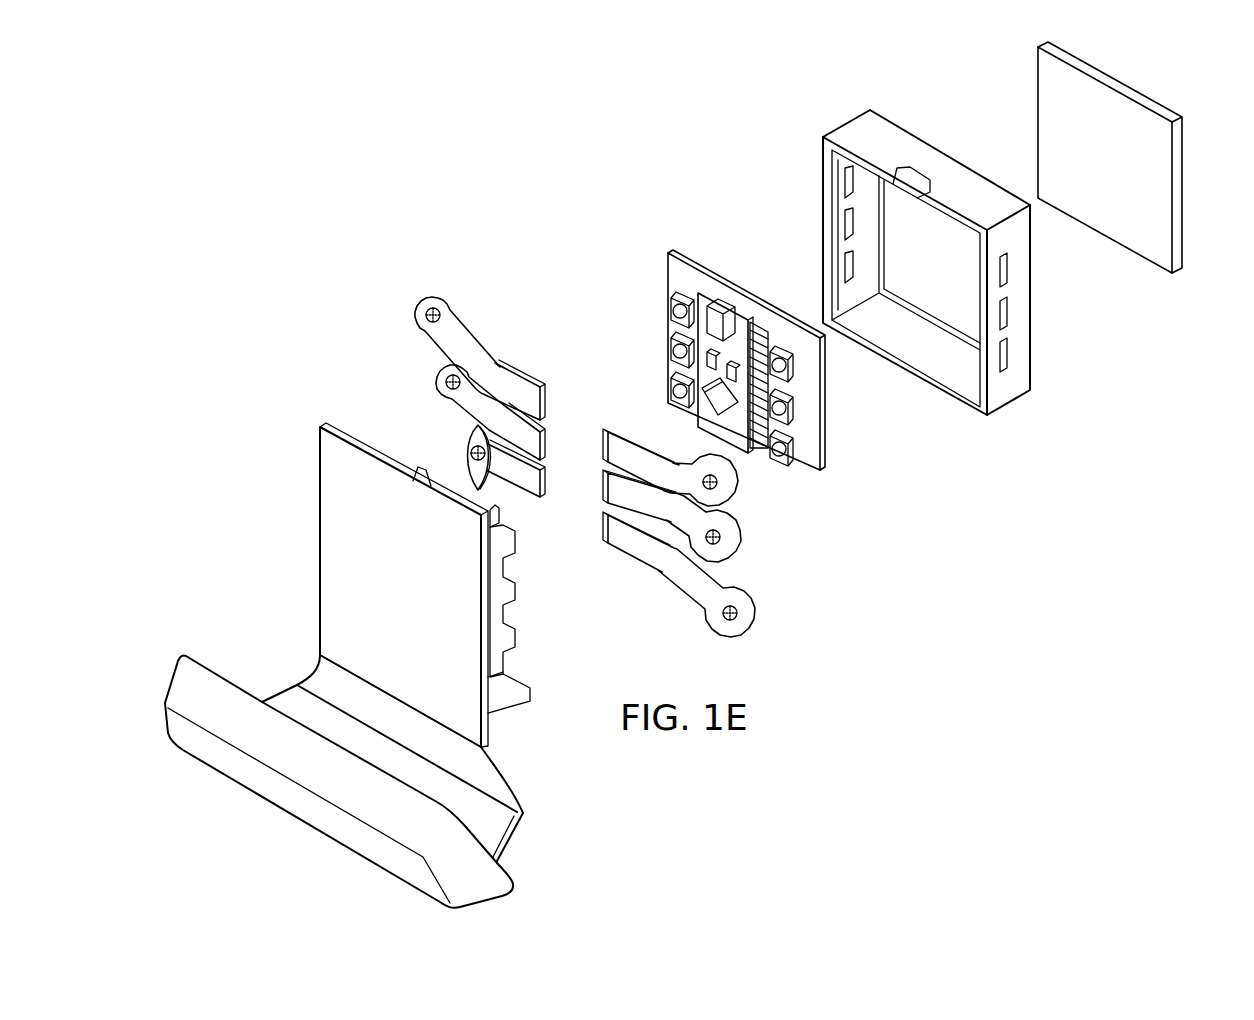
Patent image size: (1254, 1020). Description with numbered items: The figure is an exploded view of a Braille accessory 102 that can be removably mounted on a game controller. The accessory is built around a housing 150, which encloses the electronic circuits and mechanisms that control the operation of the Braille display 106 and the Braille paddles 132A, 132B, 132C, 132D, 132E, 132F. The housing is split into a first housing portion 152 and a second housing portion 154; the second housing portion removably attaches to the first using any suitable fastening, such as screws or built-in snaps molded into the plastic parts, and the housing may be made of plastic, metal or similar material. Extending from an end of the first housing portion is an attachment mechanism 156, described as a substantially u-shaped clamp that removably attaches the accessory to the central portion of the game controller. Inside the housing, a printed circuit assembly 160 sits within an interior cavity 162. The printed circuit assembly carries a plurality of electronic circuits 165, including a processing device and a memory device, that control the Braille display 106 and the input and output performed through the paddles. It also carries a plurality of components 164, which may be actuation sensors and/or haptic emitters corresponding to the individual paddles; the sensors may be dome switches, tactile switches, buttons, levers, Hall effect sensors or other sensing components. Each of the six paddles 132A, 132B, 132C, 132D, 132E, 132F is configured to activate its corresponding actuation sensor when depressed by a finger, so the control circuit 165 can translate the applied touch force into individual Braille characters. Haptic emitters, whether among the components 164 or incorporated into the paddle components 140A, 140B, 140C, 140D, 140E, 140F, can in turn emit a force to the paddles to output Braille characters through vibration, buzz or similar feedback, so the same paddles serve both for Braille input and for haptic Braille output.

The Braille accessory 102 is at (578, 148).
The Braille display 106 is at (1184, 195).
The Braille paddle 132A is at (735, 488).
The Braille paddle 132B is at (744, 544).
The Braille paddle 132C is at (751, 619).
The Braille paddle 132D is at (418, 315).
The Braille paddle 132E is at (439, 385).
The Braille paddle 132F is at (468, 450).
The paddle component 140A is at (723, 483).
The paddle component 140B is at (722, 540).
The paddle component 140C is at (732, 616).
The paddle component 140D is at (421, 302).
The paddle component 140E is at (445, 365).
The paddle component 140F is at (467, 435).
The housing 150 is at (319, 483).
The first housing portion 152 is at (344, 537).
The second housing portion 154 is at (1021, 327).
The attachment mechanism 156 is at (291, 820).
The printed circuit assembly 160 is at (821, 411).
The interior cavity 162 is at (840, 247).
The components 164 is at (671, 312).
The electronic circuits 165 is at (716, 440).